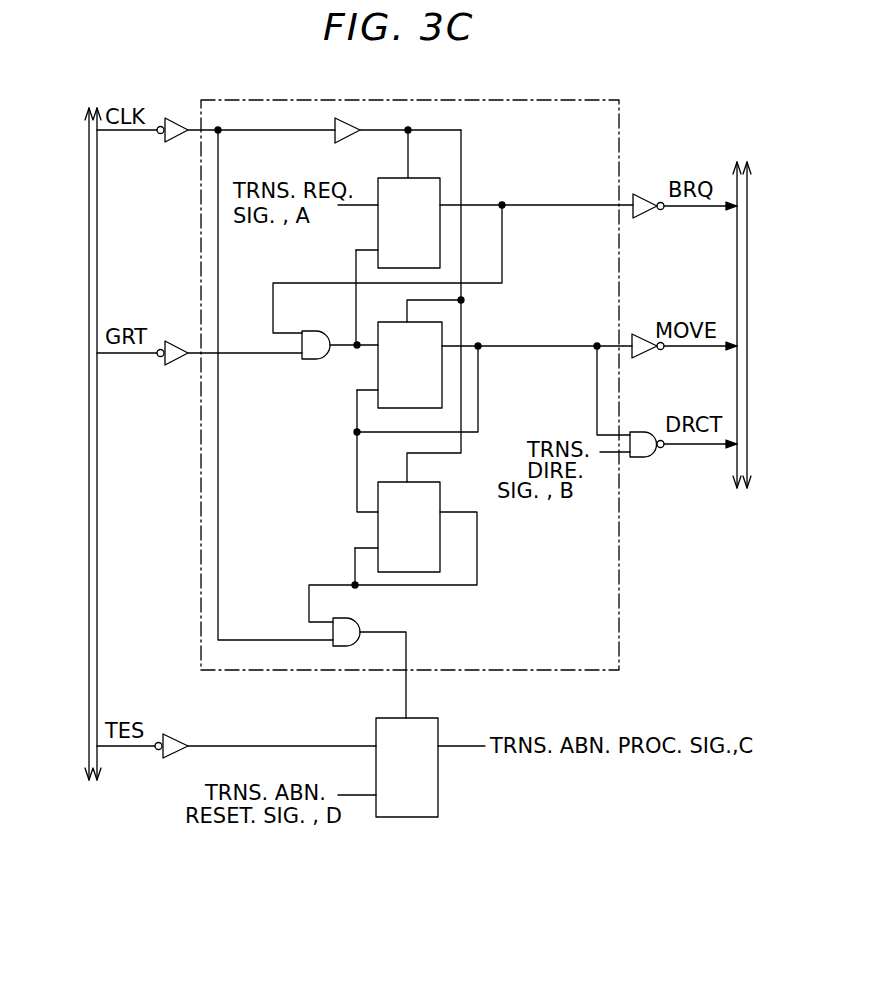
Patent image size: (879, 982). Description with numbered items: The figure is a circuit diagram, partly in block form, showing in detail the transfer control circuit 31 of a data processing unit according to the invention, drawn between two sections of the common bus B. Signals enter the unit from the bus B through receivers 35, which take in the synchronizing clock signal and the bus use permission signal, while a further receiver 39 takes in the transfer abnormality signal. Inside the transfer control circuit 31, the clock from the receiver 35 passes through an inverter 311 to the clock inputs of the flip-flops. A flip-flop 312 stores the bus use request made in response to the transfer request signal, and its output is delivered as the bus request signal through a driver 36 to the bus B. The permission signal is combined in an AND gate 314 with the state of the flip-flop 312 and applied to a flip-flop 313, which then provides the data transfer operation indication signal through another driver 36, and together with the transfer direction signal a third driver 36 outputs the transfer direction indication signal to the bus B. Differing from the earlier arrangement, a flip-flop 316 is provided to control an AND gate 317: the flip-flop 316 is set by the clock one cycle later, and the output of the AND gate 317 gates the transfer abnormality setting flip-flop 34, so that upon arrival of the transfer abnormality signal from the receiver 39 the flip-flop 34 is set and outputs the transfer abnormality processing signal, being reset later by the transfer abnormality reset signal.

The transfer control circuit 31 is at (620, 136).
The inverter 311 is at (350, 120).
The flip-flop 312 is at (378, 230).
The flip-flop 313 is at (378, 375).
The AND gate 314 is at (310, 359).
The flip-flop 316 is at (378, 526).
The AND gate 317 is at (352, 620).
The transfer abnormality setting flip-flop 34 is at (425, 817).
The receiver 35 is at (178, 140).
The driver 36 is at (648, 218).
The receiver 39 is at (178, 755).
The bus B is at (89, 287).